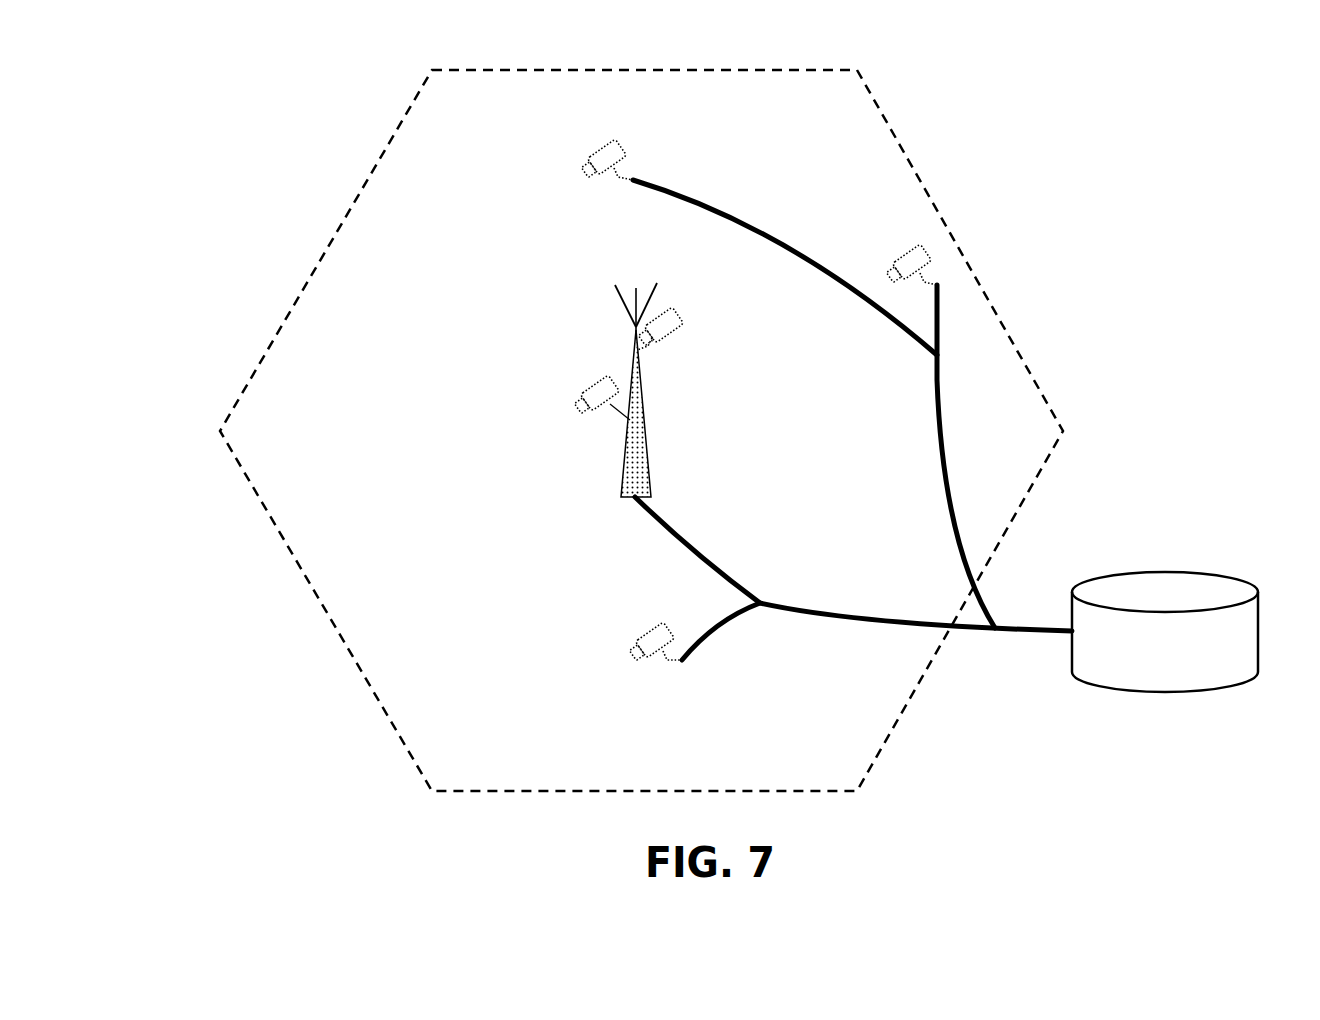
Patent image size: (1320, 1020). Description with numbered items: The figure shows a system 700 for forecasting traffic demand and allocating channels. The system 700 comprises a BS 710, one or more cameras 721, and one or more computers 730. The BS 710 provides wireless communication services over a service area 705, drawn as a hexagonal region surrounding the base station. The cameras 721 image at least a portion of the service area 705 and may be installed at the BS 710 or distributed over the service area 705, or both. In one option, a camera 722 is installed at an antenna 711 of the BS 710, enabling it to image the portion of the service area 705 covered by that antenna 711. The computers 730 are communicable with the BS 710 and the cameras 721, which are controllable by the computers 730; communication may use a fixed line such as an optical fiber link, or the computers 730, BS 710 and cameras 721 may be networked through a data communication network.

The system 700 is at (186, 778).
The service area 705 is at (629, 430).
The BS 710 is at (643, 372).
The antenna 711 is at (636, 281).
The camera 721 is at (740, 372).
The camera 722 is at (703, 303).
The computer 730 is at (1165, 683).